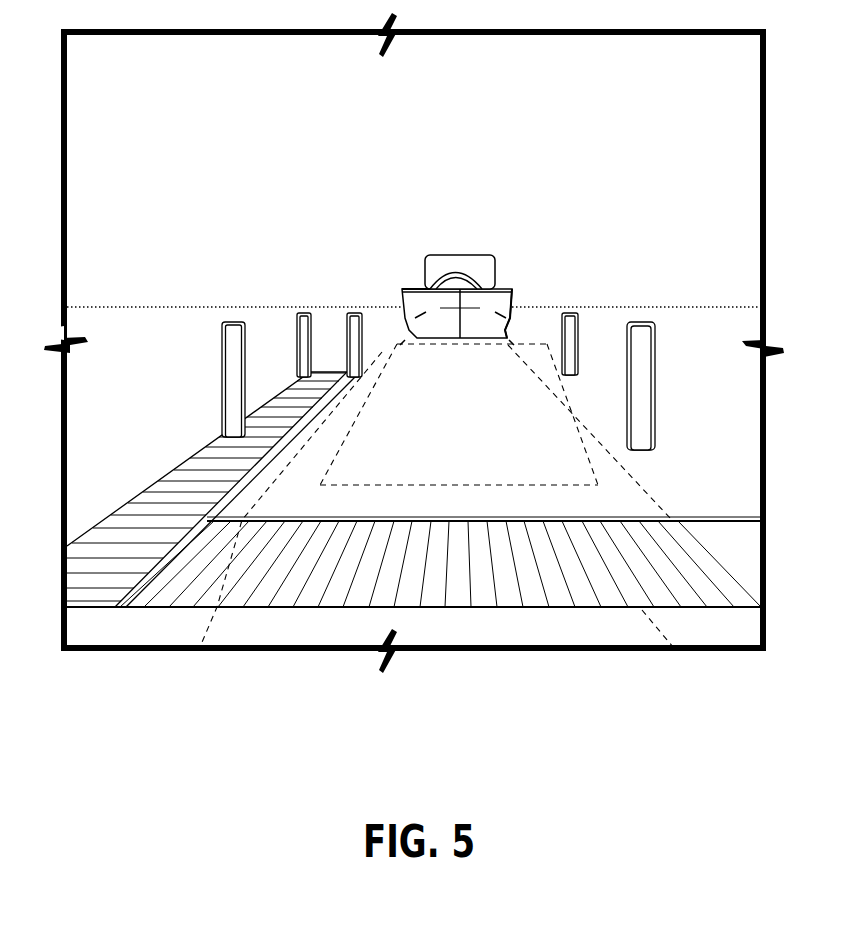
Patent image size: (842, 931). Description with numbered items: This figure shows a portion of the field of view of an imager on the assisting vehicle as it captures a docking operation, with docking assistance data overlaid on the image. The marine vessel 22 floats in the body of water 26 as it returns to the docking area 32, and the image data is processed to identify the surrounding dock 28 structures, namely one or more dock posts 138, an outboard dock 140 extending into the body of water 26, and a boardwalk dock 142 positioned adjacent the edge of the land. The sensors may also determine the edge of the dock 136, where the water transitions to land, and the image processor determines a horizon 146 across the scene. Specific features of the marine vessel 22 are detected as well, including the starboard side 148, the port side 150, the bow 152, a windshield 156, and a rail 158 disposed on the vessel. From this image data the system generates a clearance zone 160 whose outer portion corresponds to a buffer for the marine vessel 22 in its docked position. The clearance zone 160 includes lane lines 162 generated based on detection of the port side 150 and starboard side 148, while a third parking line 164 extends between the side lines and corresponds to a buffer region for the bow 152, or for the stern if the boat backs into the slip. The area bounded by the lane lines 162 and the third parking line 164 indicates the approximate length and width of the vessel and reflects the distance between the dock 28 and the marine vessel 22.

The marine vessel 22 is at (465, 260).
The body of water 26 is at (731, 420).
The dock 28 is at (145, 490).
The docking area 32 is at (688, 343).
The edge of the dock 136 is at (233, 490).
The dock posts 138 is at (355, 313).
The outboard dock 140 is at (44, 619).
The boardwalk dock 142 is at (295, 588).
The horizon 146 is at (90, 306).
The starboard side 148 is at (458, 308).
The port side 150 is at (507, 326).
The bow 152 is at (420, 288).
The windshield 156 is at (478, 266).
The rail 158 is at (470, 270).
The clearance zone 160 is at (480, 416).
The lane lines 162 is at (348, 434).
The third parking line 164 is at (413, 485).